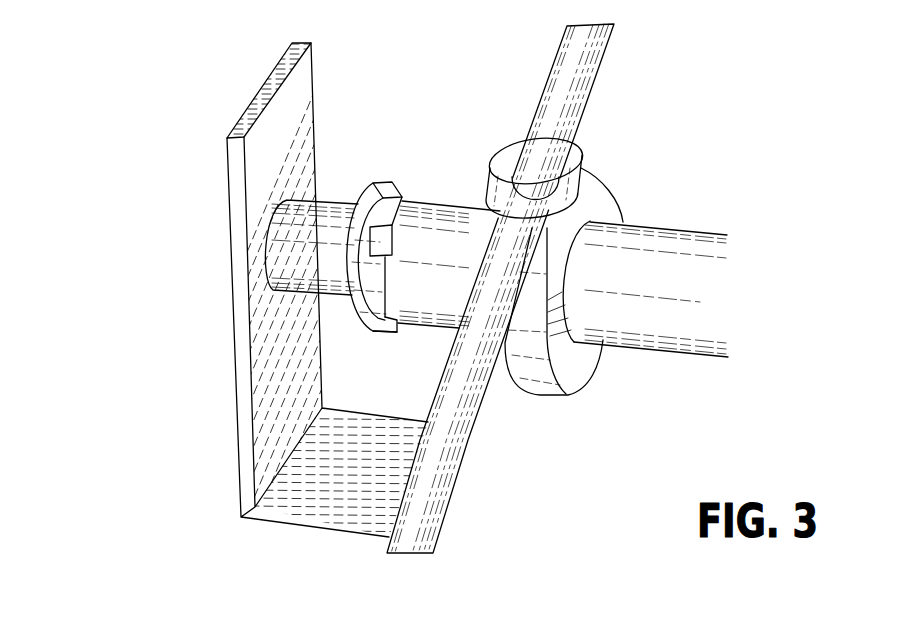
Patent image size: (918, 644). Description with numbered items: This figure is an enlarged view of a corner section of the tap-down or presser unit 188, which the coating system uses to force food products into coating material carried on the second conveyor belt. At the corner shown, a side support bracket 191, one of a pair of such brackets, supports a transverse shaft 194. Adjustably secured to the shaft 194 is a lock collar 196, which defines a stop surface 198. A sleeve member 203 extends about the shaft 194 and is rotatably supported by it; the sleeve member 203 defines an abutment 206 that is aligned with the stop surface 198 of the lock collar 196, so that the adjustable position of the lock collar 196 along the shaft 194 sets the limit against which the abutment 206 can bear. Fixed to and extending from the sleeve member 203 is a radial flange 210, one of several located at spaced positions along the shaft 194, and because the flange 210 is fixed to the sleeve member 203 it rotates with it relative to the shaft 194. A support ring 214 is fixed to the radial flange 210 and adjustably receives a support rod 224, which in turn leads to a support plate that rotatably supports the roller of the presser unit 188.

The presser unit 188 is at (205, 73).
The side support bracket 191 is at (273, 154).
The transverse shaft 194 is at (330, 226).
The lock collar 196 is at (377, 308).
The stop surface 198 is at (372, 250).
The sleeve member 203 is at (433, 228).
The abutment 206 is at (405, 195).
The radial flange 210 is at (604, 195).
The support ring 214 is at (559, 160).
The support rod 224 is at (583, 42).